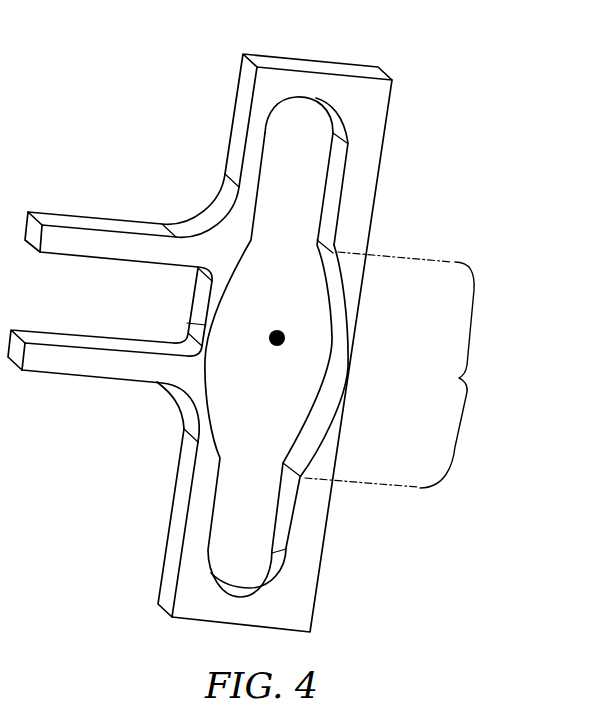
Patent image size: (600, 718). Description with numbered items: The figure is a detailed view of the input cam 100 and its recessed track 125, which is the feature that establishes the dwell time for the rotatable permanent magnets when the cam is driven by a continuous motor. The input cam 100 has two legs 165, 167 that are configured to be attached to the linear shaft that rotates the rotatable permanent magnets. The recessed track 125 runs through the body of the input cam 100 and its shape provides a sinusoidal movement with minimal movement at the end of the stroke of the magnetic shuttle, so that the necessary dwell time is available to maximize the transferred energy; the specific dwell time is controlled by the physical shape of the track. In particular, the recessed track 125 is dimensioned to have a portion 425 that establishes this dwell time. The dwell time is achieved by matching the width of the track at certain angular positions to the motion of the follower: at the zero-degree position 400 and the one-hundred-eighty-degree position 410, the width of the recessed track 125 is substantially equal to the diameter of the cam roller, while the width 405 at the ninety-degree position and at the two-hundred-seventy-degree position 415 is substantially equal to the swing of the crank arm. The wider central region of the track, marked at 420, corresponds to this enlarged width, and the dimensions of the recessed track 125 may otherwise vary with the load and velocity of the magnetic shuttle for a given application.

The input cam 100 is at (355, 64).
The recessed track 125 is at (343, 178).
The leg 165 is at (88, 215).
The leg 167 is at (88, 380).
The 0° position 400 is at (232, 597).
The width at the 90° position 405 is at (348, 362).
The 180° position 410 is at (310, 97).
The 270° position 415 is at (187, 322).
The pivot point 420 is at (330, 333).
The portion 425 is at (408, 370).